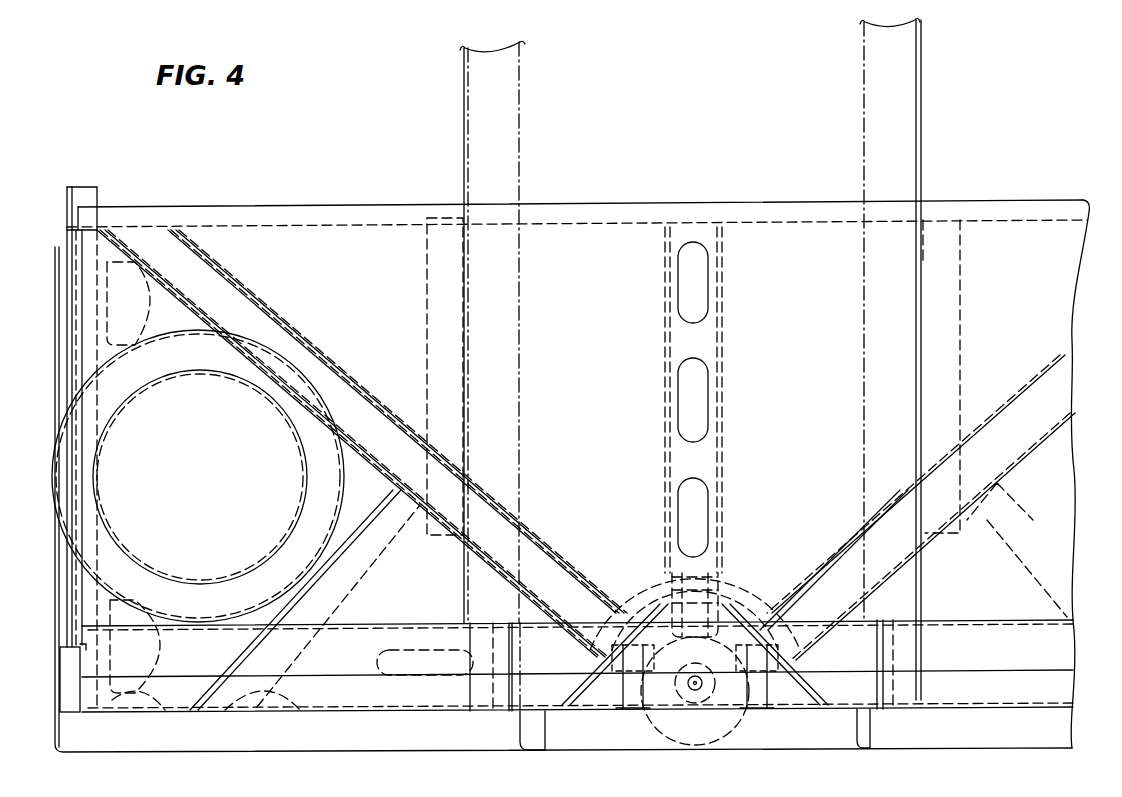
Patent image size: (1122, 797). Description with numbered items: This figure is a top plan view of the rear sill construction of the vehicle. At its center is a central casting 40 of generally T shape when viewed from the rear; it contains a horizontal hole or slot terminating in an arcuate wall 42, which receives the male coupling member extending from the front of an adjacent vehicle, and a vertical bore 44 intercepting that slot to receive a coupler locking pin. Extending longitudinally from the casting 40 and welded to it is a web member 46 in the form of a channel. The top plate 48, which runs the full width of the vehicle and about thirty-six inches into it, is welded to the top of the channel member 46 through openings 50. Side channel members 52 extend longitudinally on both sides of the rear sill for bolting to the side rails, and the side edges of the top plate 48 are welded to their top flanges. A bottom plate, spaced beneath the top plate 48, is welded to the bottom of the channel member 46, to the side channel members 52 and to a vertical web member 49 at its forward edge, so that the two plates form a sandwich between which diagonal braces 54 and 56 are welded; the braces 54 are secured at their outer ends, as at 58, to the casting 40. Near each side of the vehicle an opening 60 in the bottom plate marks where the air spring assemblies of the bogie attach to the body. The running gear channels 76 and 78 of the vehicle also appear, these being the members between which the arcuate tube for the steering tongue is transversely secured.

The central casting 40 is at (524, 746).
The arcuate wall 42 is at (735, 600).
The vertical bore 44 is at (705, 700).
The web member 46 is at (722, 510).
The top plate 48 is at (629, 238).
The vertical web member 49 is at (345, 222).
The openings 50 is at (712, 383).
The side channel members 52 is at (92, 187).
The diagonal braces 54 is at (250, 290).
The diagonal braces 56 is at (357, 580).
The brace attachment location 58 is at (617, 612).
The opening 60 is at (305, 493).
The running gear channel 76 is at (870, 253).
The running gear channel 78 is at (518, 395).